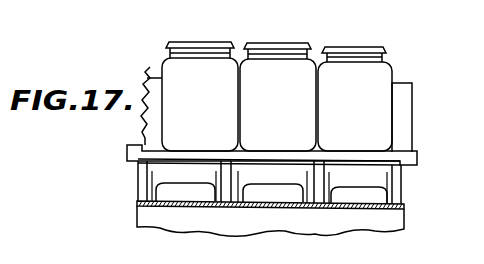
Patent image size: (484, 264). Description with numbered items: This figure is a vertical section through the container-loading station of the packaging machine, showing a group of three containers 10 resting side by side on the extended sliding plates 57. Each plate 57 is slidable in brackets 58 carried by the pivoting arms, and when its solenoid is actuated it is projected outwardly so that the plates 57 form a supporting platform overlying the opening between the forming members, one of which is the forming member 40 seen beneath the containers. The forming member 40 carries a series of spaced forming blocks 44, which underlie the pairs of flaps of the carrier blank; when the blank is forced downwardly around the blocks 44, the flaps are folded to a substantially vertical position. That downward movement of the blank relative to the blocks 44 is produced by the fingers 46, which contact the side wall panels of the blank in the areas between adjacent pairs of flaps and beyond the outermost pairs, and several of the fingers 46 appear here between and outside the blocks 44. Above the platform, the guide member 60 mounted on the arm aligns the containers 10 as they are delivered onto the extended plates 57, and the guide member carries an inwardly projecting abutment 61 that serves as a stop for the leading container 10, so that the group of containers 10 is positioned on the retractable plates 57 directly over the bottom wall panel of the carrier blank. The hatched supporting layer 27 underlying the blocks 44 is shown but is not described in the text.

The container 10 is at (197, 42).
The hatched support layer 27 is at (304, 207).
The forming member 40 is at (284, 221).
The forming block 44 is at (182, 195).
The finger 46 is at (137, 176).
The sliding plate 57 is at (340, 160).
The bracket 58 is at (146, 125).
The guide member 60 is at (160, 78).
The abutment 61 is at (402, 83).